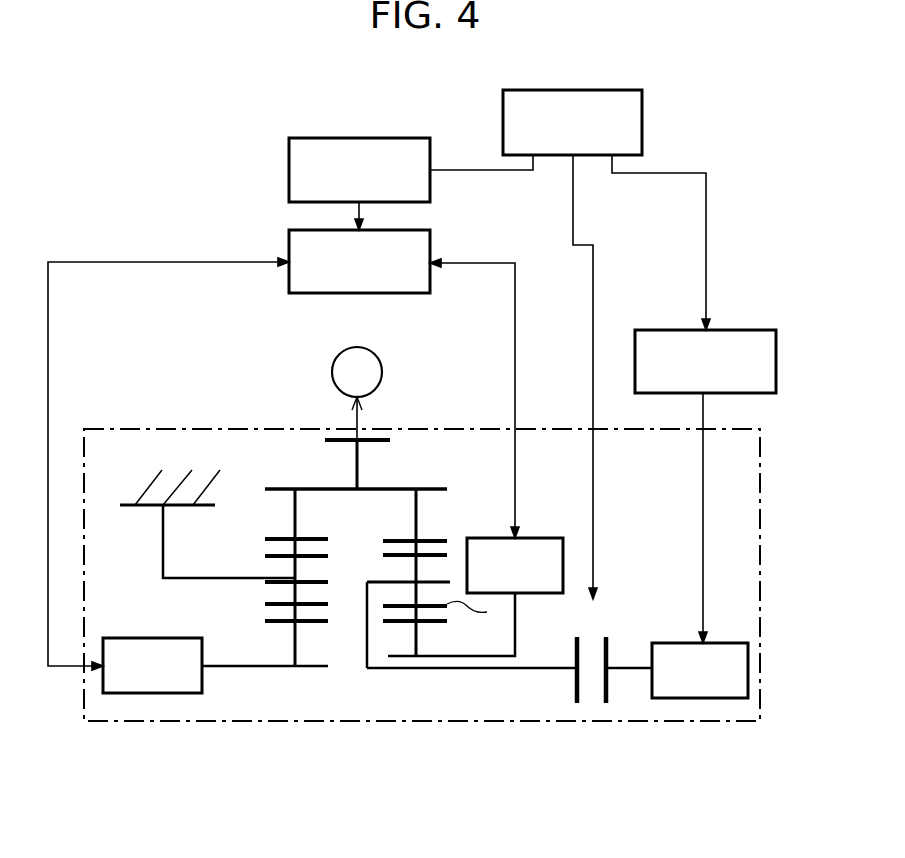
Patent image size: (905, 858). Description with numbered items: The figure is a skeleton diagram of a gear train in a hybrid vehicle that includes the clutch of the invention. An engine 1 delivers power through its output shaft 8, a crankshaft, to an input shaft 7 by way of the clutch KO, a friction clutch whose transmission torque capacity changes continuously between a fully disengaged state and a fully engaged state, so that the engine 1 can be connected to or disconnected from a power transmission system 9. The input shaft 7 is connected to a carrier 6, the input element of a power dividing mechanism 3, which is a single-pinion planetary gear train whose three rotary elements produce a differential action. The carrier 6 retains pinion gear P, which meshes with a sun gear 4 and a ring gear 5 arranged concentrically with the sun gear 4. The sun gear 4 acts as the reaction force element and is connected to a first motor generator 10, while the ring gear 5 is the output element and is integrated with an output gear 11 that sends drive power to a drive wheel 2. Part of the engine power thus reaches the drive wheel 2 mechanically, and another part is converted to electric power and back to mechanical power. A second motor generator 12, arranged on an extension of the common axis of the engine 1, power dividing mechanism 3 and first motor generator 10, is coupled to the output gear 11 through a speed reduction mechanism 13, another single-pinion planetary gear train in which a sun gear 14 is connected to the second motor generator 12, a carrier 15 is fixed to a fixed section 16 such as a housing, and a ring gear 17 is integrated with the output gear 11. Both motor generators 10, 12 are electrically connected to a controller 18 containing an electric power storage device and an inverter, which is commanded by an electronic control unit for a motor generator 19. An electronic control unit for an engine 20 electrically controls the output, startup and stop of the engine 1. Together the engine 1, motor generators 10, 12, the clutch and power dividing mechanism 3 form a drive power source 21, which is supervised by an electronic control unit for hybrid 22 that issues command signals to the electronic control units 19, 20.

The engine 1 is at (730, 643).
The drive wheel 2 is at (382, 370).
The power dividing mechanism 3 is at (429, 560).
The sun gear 4 is at (437, 625).
The ring gear 5 is at (397, 540).
The carrier 6 is at (380, 582).
The input shaft 7 is at (525, 670).
The output shaft 8 is at (636, 666).
The power transmission system 9 is at (309, 706).
The first motor generator 10 is at (540, 538).
The output gear 11 is at (375, 442).
The second motor generator 12 is at (150, 638).
The speed reduction mechanism 13 is at (288, 599).
The sun gear 14 is at (318, 625).
The carrier 15 is at (208, 578).
The fixed section 16 is at (160, 482).
The ring gear 17 is at (275, 538).
The controller 18 is at (430, 246).
The electronic control unit for a motor generator 19 is at (393, 138).
The electronic control unit for an engine 20 is at (748, 330).
The drive power source 21 is at (760, 505).
The electronic control unit for hybrid 22 is at (642, 115).